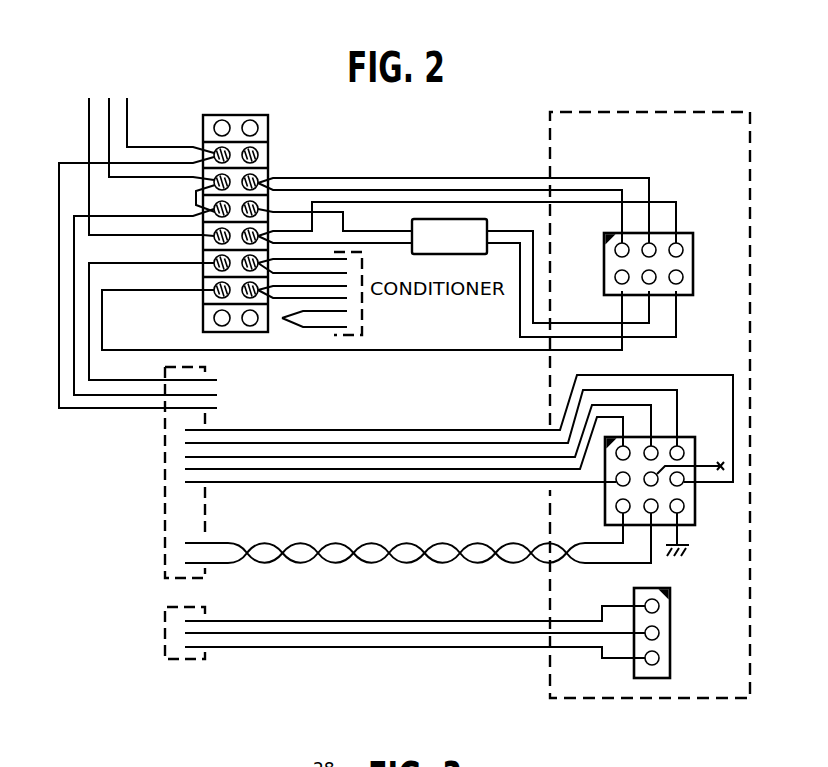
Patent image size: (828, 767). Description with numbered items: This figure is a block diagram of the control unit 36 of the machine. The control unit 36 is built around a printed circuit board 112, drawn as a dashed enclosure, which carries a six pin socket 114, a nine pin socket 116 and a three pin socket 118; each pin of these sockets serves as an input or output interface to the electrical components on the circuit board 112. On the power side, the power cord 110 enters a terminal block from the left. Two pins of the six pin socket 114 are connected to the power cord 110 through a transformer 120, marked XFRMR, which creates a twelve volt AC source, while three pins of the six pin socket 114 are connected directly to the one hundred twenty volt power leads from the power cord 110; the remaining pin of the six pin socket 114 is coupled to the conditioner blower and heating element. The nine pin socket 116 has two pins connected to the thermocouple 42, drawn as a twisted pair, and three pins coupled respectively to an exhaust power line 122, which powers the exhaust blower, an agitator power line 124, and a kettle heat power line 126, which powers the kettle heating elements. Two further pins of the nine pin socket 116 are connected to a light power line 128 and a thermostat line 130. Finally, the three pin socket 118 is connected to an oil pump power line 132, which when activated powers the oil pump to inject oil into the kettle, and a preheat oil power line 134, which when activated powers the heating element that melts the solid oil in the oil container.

The control unit 36 is at (377, 155).
The power cord 110 is at (130, 113).
The printed circuit board 112 is at (641, 112).
The 6 pin socket 114 is at (698, 243).
The 9 pin socket 116 is at (687, 433).
The 3 pin socket 118 is at (672, 640).
The transformer 120 is at (448, 254).
The exhaust power line 122 is at (325, 428).
The agitator power line 124 is at (395, 441).
The kettle heat power line 126 is at (470, 455).
The light power line 128 is at (368, 471).
The thermostat line 130 is at (487, 484).
The oil pump power line 132 is at (372, 620).
The preheat oil power line 134 is at (378, 635).
The thermocouple 42 is at (219, 553).